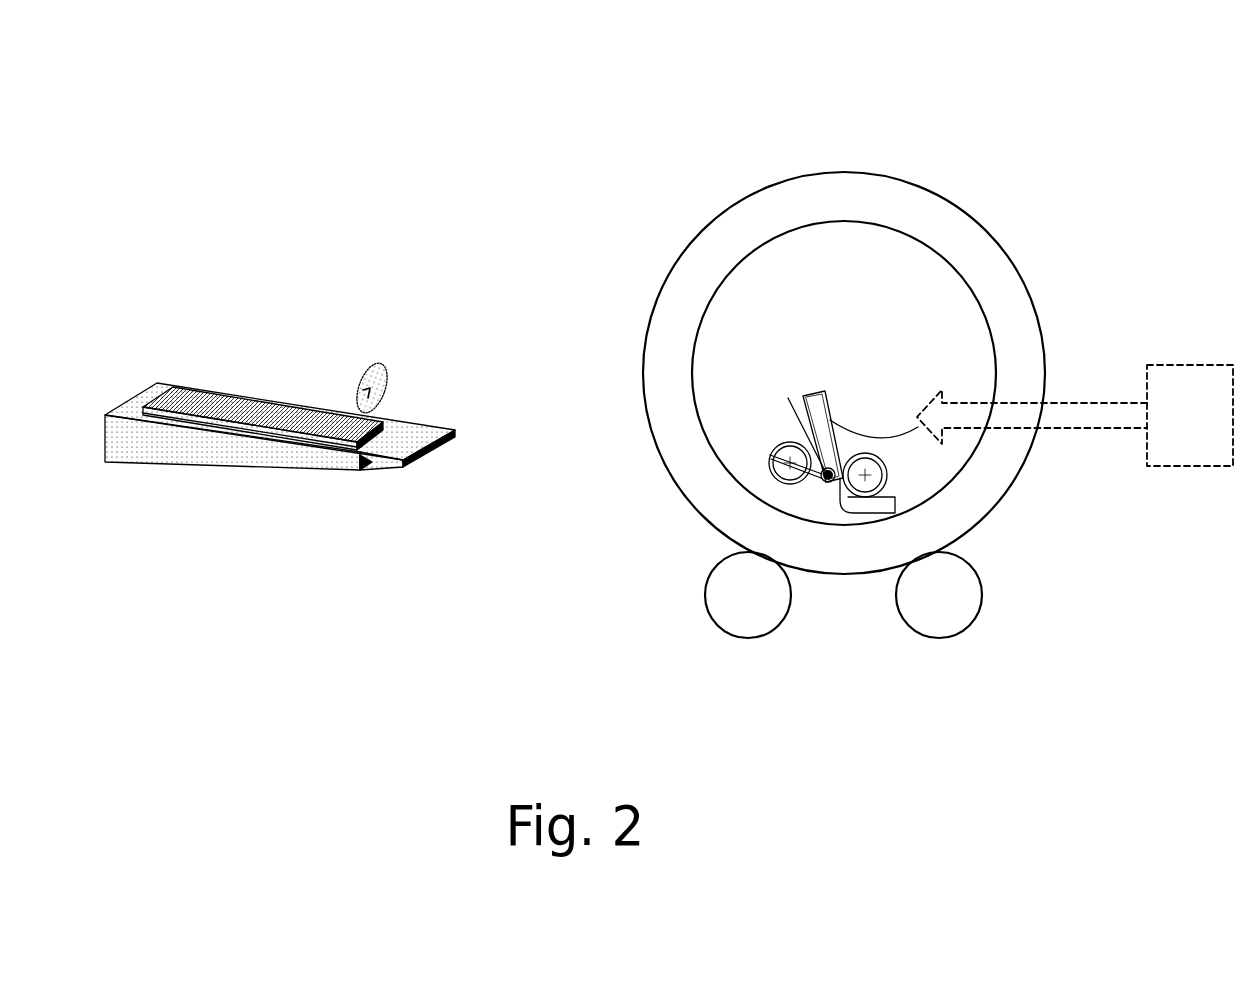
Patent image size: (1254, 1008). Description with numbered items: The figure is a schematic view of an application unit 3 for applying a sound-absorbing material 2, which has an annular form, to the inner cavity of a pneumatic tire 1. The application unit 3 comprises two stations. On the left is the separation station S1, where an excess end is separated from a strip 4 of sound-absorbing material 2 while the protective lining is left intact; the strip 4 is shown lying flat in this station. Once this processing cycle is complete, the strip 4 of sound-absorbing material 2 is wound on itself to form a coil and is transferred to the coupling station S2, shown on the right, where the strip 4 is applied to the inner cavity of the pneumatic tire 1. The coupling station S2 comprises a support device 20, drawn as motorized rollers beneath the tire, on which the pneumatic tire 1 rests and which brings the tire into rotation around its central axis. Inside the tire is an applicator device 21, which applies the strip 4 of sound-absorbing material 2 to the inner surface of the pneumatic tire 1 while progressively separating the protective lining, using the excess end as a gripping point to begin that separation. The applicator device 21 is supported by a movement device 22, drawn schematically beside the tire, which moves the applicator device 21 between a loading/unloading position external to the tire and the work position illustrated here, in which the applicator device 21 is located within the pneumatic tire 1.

The pneumatic tire 1 is at (843, 193).
The sound-absorbing material 2 is at (192, 400).
The application unit 3 is at (222, 136).
The strip 4 is at (283, 358).
The support device 20 is at (732, 600).
The applicator device 21 is at (728, 376).
The movement device 22 is at (1075, 415).
The separation station S1 is at (249, 526).
The coupling station S2 is at (859, 672).